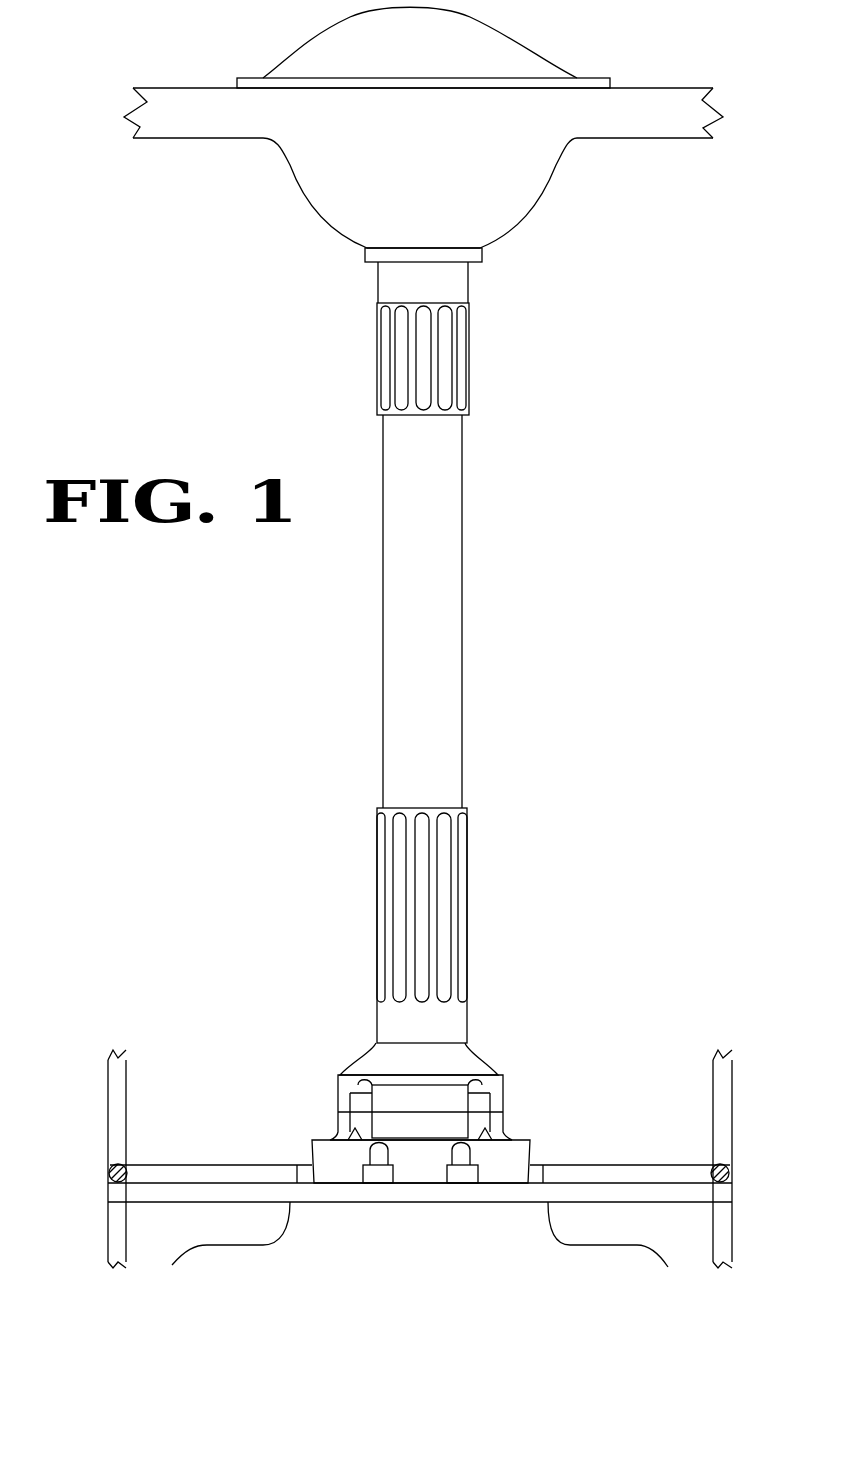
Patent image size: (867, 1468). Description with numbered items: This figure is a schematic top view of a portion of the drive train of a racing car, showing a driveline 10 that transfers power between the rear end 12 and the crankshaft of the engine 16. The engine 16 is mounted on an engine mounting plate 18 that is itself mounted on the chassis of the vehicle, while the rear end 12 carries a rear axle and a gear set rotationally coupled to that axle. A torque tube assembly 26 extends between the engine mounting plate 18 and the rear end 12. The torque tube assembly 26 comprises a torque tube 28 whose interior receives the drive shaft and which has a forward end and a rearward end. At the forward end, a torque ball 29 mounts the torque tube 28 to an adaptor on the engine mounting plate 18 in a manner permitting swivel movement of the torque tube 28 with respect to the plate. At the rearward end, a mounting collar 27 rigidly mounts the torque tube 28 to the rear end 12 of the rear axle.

The driveline 10 is at (637, 827).
The rear end 12 is at (473, 218).
The engine 16 is at (447, 1263).
The engine mounting plate 18 is at (235, 1190).
The torque tube assembly 26 is at (540, 672).
The mounting collar 27 is at (432, 372).
The torque tube 28 is at (427, 753).
The torque ball 29 is at (458, 1062).